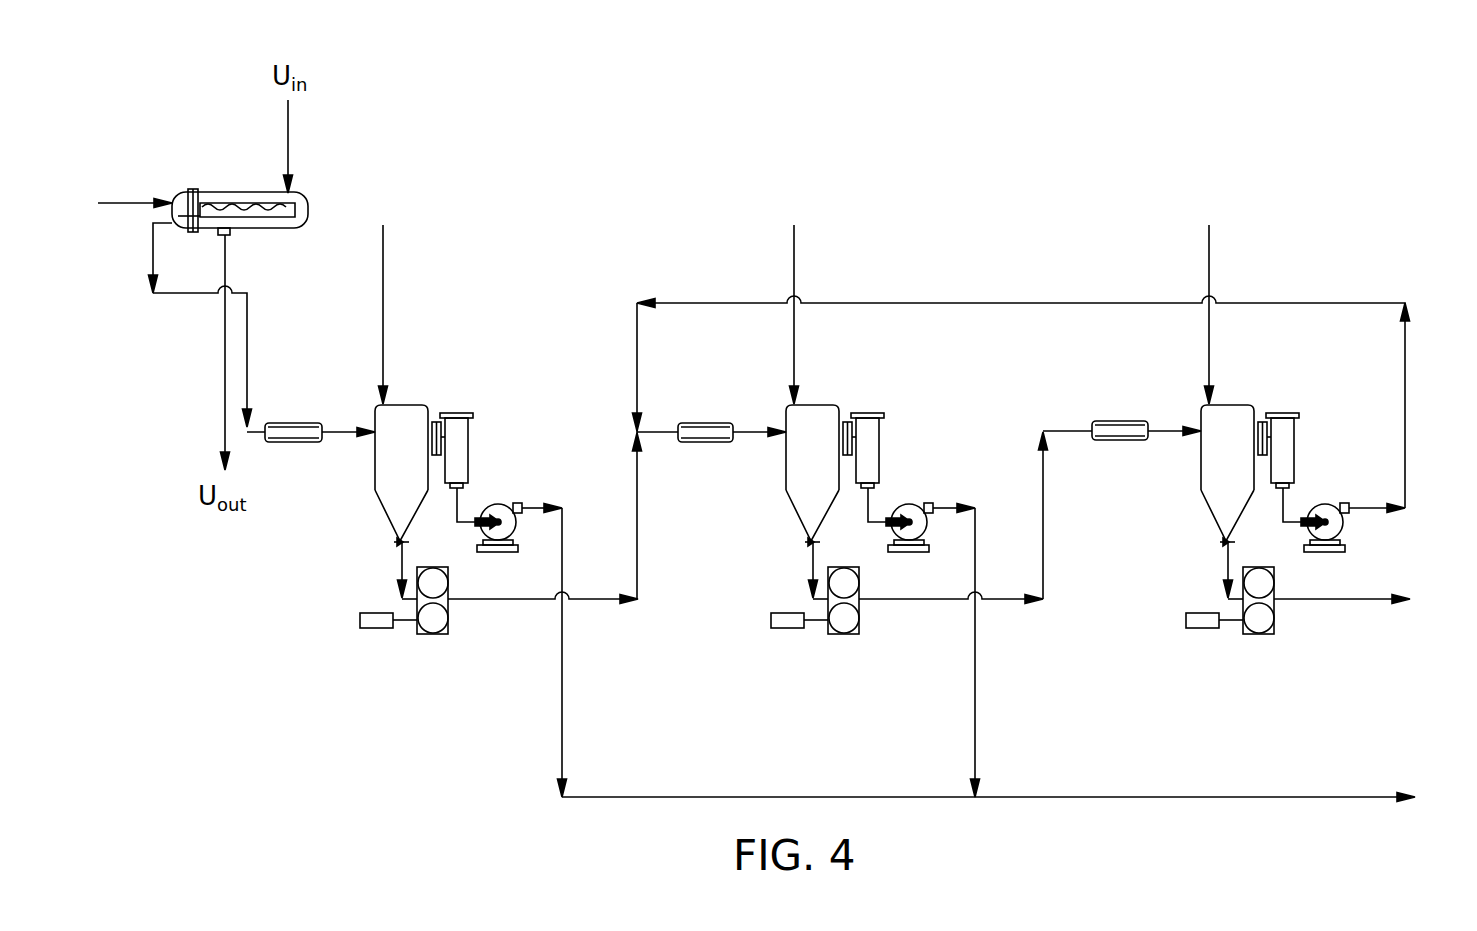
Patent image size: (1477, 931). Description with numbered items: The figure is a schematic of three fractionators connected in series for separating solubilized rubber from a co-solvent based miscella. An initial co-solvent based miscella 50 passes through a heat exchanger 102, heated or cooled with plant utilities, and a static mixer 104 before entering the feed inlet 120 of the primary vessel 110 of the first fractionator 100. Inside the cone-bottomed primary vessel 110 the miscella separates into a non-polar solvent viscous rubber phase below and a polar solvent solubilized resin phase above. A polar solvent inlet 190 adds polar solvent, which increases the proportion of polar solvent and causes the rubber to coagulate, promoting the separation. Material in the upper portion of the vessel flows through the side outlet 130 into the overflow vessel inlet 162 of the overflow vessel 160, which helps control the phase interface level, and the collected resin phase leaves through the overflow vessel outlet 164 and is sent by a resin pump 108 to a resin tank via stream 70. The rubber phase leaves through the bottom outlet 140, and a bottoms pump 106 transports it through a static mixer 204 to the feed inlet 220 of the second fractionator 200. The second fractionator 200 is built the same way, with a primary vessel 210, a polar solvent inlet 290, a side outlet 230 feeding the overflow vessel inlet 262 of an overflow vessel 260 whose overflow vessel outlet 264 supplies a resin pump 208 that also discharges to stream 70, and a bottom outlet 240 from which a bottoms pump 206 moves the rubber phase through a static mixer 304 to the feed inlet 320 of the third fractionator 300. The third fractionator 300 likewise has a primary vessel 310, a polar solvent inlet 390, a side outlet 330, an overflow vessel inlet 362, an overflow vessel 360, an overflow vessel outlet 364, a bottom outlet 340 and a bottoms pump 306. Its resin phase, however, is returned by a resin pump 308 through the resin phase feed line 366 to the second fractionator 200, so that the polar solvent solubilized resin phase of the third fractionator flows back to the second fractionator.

The initial co-solvent based miscella 50 is at (133, 203).
The heat exchanger 102 is at (225, 192).
The static mixer 104 is at (292, 423).
The first fractionator 100 is at (412, 404).
The polar solvent inlet 190 is at (386, 403).
The feed inlet 120 is at (375, 437).
The primary vessel 110 is at (375, 490).
The bottom outlet 140 is at (398, 542).
The bottoms pump 106 is at (433, 635).
The side outlet 130 is at (446, 412).
The overflow vessel inlet 162 is at (446, 437).
The overflow vessel 160 is at (468, 440).
The overflow vessel outlet 164 is at (468, 483).
The resin pump 108 is at (503, 553).
The static mixer 204 is at (710, 423).
The polar solvent inlet 290 is at (790, 403).
The second fractionator 200 is at (822, 403).
The feed inlet 220 is at (786, 437).
The primary vessel 210 is at (786, 490).
The bottom outlet 240 is at (809, 542).
The bottoms pump 206 is at (845, 635).
The side outlet 230 is at (857, 412).
The overflow vessel inlet 262 is at (857, 437).
The overflow vessel 260 is at (879, 440).
The overflow vessel outlet 264 is at (879, 483).
The resin pump 208 is at (916, 553).
The static mixer 304 is at (1118, 421).
The polar solvent inlet 390 is at (1206, 401).
The third fractionator 300 is at (1219, 401).
The feed inlet 320 is at (1201, 436).
The primary vessel 310 is at (1201, 490).
The bottom outlet 340 is at (1224, 542).
The bottoms pump 306 is at (1259, 635).
The side outlet 330 is at (1267, 415).
The overflow vessel inlet 362 is at (1288, 418).
The overflow vessel 360 is at (1294, 436).
The overflow vessel outlet 364 is at (1287, 488).
The resin pump 308 is at (1345, 530).
The resin phase feed line 366 is at (1405, 342).
The stream 70 is at (1335, 797).